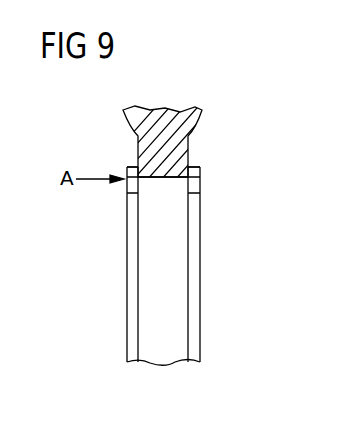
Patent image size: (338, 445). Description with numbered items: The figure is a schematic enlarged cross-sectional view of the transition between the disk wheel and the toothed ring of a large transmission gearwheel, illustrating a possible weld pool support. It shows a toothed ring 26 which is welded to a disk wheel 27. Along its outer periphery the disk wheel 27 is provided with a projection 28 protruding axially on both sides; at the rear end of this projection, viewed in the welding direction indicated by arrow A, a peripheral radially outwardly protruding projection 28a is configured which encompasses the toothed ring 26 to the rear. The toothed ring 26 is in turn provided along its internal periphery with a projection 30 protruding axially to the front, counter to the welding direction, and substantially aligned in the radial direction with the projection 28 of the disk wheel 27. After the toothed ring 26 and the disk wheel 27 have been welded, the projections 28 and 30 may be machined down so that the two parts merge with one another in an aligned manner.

The toothed ring 26 is at (160, 132).
The disk wheel 27 is at (165, 350).
The projection 28 is at (192, 187).
The peripheral radially outwardly protruding projection 28a is at (198, 168).
The projection 30 is at (128, 168).